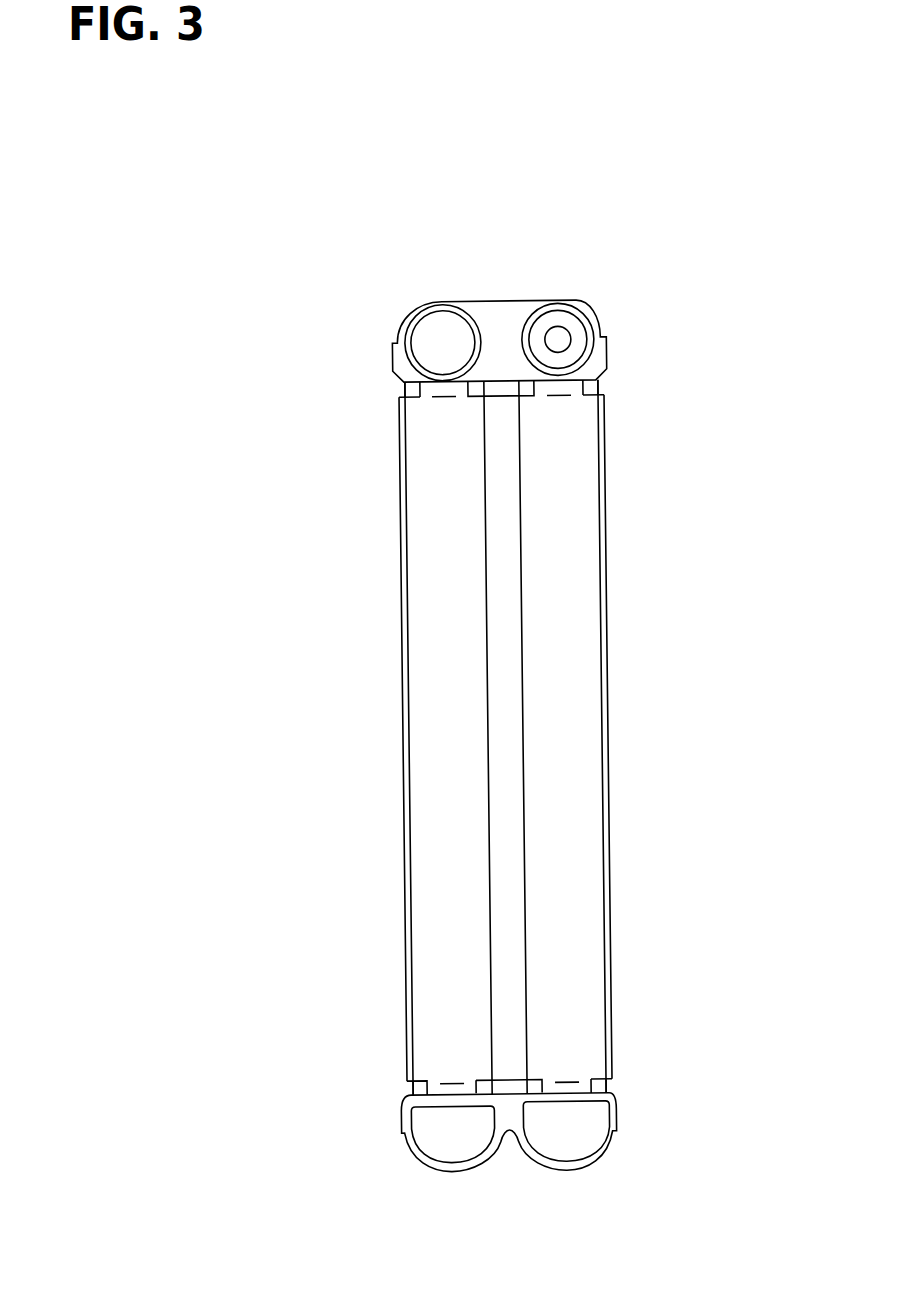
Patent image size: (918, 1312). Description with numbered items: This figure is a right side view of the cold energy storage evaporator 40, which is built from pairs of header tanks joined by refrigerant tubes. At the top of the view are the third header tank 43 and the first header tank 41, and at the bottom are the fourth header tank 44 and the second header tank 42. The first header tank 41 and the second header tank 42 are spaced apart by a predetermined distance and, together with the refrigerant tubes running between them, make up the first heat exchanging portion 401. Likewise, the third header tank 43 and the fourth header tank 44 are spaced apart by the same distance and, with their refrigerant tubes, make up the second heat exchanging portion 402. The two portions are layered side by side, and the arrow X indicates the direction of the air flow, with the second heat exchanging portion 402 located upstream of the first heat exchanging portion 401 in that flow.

The cold energy storage evaporator 40 is at (507, 729).
The first header tank 41 is at (562, 302).
The third header tank 43 is at (467, 316).
The second header tank 42 is at (592, 1160).
The fourth header tank 44 is at (475, 1163).
The first heat exchanging portion 401 is at (619, 651).
The second heat exchanging portion 402 is at (378, 662).
The arrow X is at (380, 742).